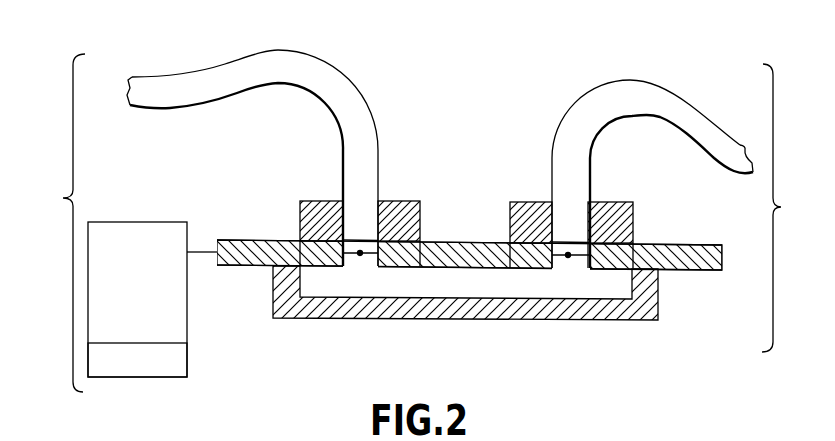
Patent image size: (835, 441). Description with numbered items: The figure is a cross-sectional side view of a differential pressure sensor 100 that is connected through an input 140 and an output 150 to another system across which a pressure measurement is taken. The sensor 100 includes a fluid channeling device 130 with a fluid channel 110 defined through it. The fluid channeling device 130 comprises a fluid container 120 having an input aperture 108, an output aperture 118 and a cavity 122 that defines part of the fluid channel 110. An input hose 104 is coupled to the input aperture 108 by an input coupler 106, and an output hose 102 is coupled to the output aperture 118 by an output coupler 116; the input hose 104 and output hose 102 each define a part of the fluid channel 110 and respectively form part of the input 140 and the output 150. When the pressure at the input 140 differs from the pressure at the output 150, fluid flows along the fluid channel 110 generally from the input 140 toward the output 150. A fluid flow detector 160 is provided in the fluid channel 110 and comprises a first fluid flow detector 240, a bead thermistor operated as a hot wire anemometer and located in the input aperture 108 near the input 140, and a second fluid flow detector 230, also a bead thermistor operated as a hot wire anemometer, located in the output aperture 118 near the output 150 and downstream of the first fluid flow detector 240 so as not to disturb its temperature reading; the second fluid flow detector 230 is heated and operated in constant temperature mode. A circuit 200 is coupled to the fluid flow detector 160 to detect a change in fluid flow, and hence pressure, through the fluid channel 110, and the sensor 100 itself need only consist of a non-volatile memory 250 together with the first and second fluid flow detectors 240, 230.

The differential pressure sensor 100 is at (52, 223).
The output hose 102 is at (249, 137).
The input hose 104 is at (656, 159).
The input coupler 106 is at (617, 202).
The input aperture 108 is at (576, 264).
The fluid channel 110 is at (270, 84).
The output coupler 116 is at (412, 183).
The output aperture 118 is at (357, 266).
The fluid container 120 is at (688, 243).
The cavity 122 is at (433, 270).
The fluid channeling device 130 is at (793, 208).
The input 140 is at (755, 162).
The output 150 is at (127, 92).
The fluid flow detector 160 is at (359, 236).
The circuit 200 is at (173, 332).
The second fluid flow detector 230 is at (361, 258).
The first fluid flow detector 240 is at (567, 260).
The non-volatile memory 250 is at (180, 360).